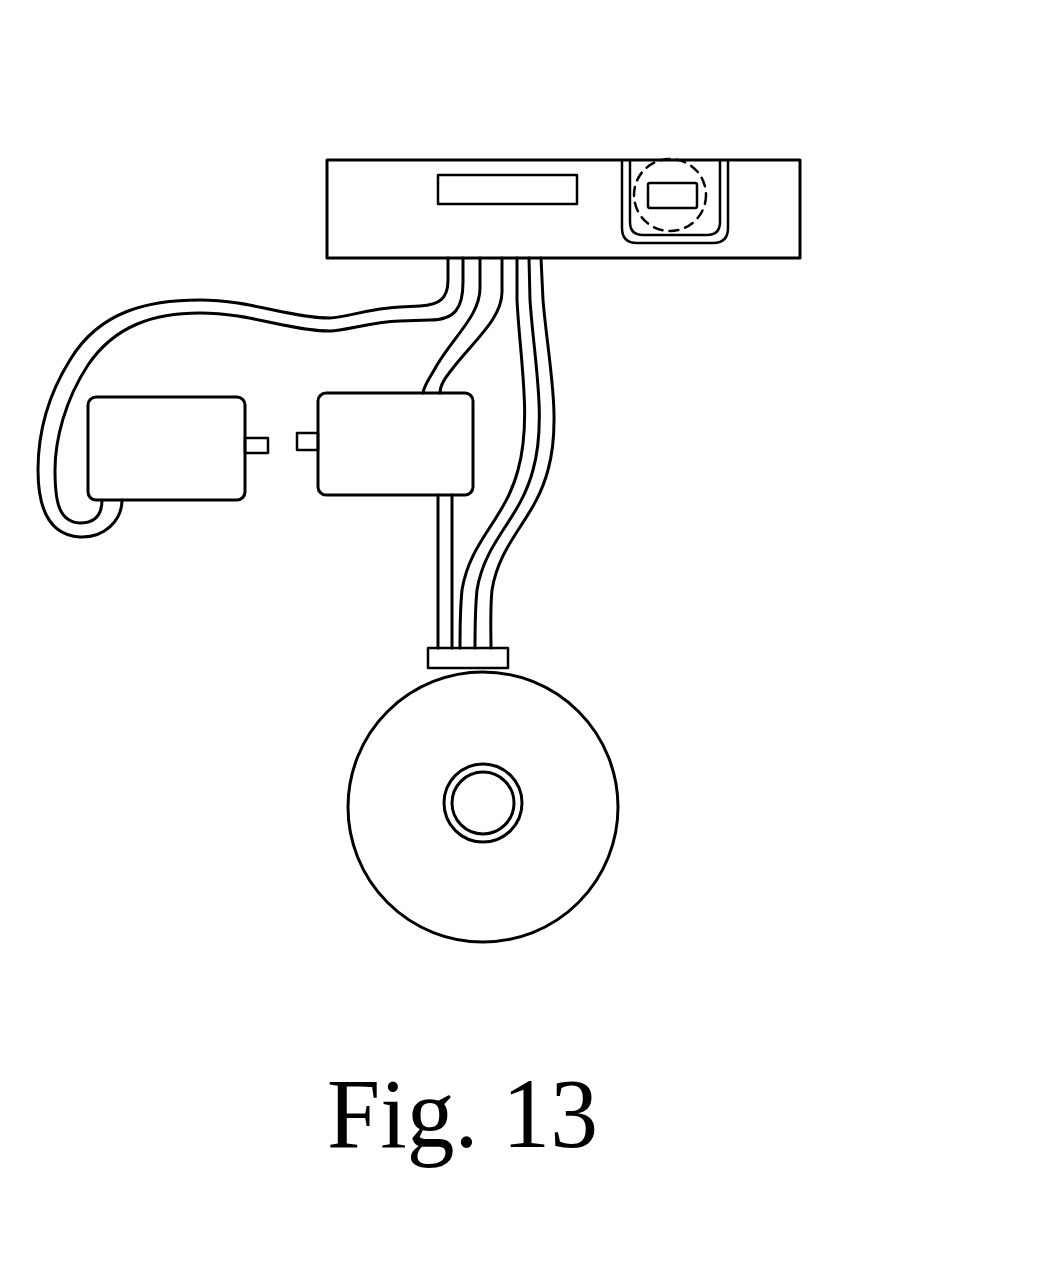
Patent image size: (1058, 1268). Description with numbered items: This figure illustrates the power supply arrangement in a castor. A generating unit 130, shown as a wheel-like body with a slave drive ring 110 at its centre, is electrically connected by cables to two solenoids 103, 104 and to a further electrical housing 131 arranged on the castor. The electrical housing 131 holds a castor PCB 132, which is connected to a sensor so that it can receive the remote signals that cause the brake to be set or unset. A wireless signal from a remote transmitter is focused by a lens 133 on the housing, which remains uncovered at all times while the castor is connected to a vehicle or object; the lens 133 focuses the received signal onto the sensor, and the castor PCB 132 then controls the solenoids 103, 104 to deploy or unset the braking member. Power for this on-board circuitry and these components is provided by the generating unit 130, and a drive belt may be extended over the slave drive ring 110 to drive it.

The solenoid 103 is at (198, 469).
The solenoid 104 is at (433, 469).
The slave drive ring 110 is at (492, 812).
The generating unit 130 is at (663, 728).
The electrical housing 131 is at (800, 210).
The castor PCB 132 is at (485, 192).
The lens 133 is at (675, 165).